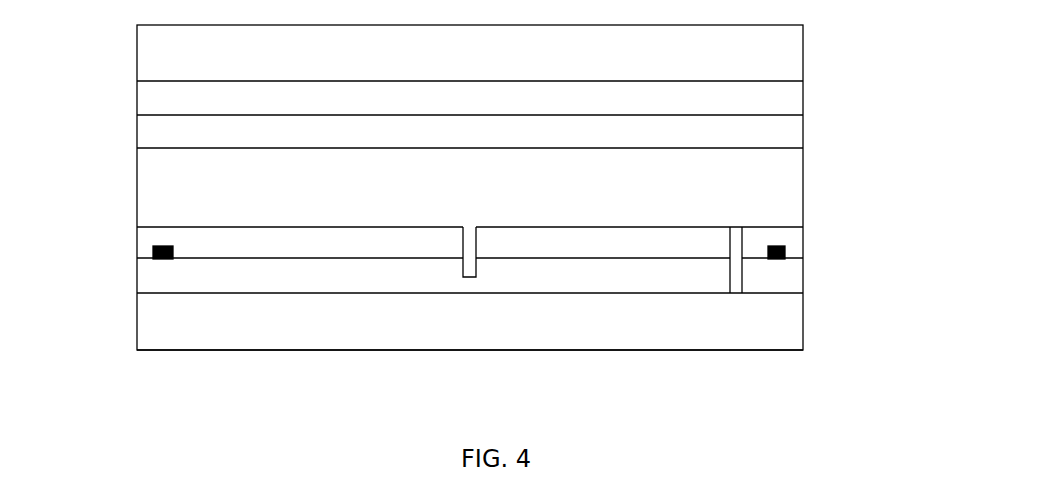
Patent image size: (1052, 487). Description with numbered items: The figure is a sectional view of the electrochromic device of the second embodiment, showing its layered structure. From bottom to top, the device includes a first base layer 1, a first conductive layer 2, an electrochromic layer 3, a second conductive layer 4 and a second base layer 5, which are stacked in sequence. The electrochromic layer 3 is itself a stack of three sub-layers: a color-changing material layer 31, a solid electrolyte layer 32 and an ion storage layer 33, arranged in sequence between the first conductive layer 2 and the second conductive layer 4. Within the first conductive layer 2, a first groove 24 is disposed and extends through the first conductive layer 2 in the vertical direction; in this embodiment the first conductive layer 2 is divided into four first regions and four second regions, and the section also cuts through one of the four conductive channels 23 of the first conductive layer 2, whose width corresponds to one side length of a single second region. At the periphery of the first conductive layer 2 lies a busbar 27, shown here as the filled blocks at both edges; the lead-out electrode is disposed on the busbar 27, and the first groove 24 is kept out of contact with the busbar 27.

The first base layer 1 is at (782, 314).
The first conductive layer 2 is at (782, 277).
The electrochromic layer 3 is at (545, 190).
The color-changing material layer 31 is at (782, 132).
The solid electrolyte layer 32 is at (782, 179).
The ion storage layer 33 is at (521, 244).
The second conductive layer 4 is at (782, 95).
The second base layer 5 is at (782, 50).
The conductive channel 23 is at (470, 287).
The first groove 24 is at (742, 293).
The busbar 27 is at (137, 243).